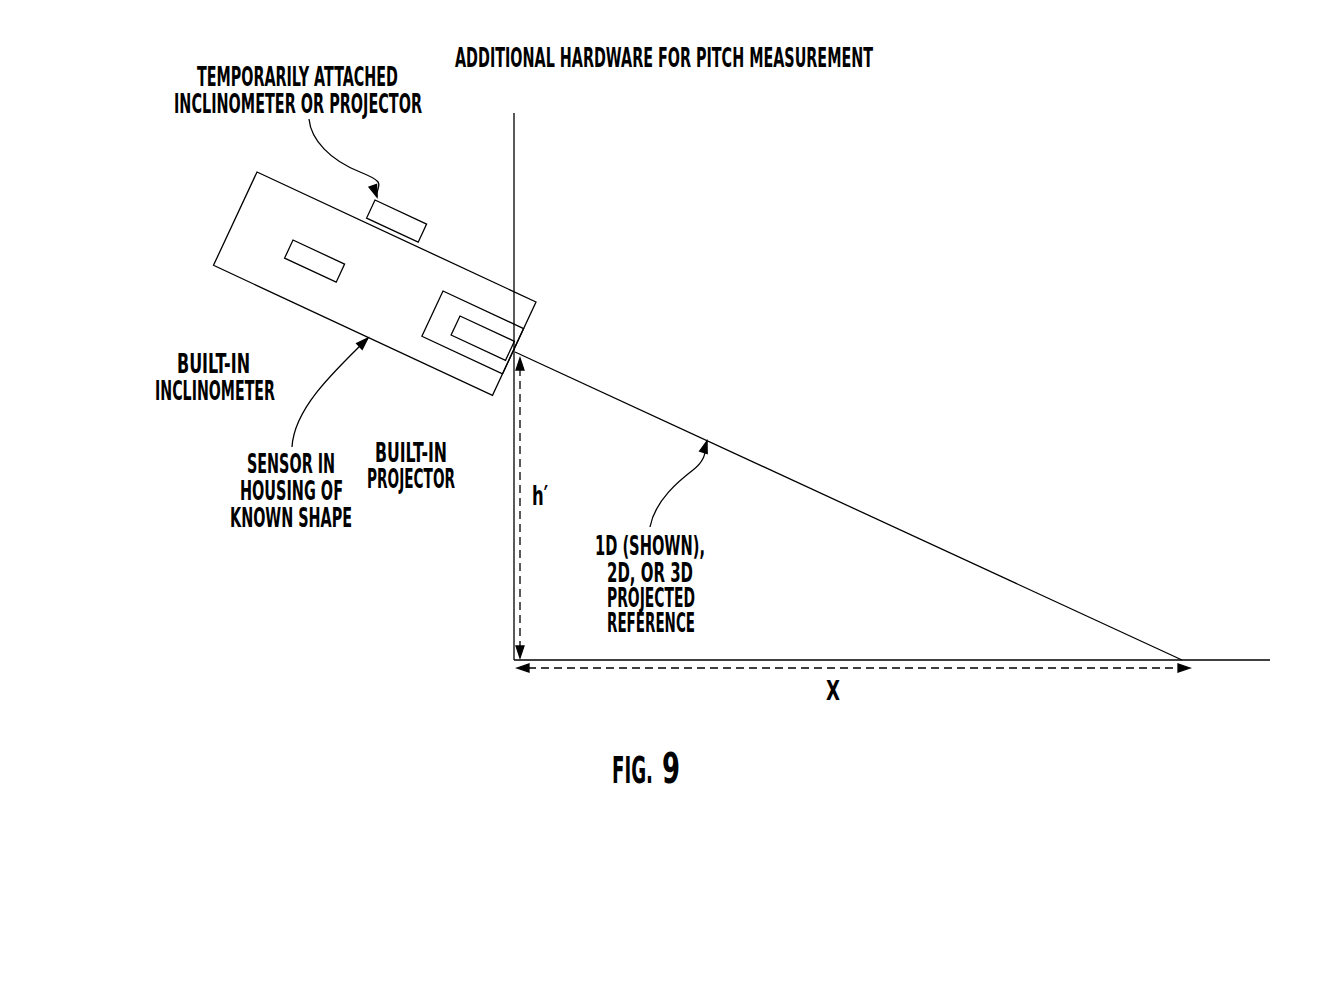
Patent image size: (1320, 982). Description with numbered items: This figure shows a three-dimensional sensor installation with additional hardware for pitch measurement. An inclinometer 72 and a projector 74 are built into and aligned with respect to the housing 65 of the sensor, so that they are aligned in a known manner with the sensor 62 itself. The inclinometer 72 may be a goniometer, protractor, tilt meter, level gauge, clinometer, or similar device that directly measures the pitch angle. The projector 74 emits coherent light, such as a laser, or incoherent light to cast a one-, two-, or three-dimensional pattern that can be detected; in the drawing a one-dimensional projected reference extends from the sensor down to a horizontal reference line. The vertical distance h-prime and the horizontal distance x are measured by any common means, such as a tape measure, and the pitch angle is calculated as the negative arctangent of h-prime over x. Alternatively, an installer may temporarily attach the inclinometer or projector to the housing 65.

The housing 65 is at (442, 258).
The inclinometer 72 is at (304, 270).
The projector 74 is at (478, 352).
The 3D sensor 62 is at (523, 328).